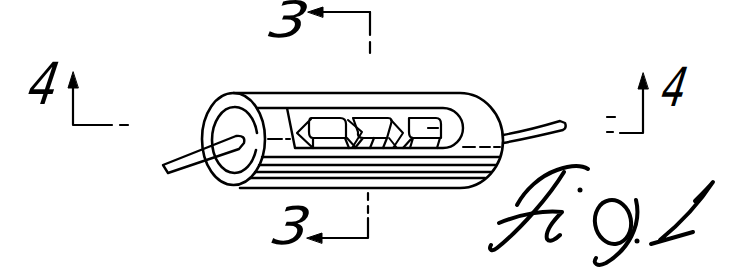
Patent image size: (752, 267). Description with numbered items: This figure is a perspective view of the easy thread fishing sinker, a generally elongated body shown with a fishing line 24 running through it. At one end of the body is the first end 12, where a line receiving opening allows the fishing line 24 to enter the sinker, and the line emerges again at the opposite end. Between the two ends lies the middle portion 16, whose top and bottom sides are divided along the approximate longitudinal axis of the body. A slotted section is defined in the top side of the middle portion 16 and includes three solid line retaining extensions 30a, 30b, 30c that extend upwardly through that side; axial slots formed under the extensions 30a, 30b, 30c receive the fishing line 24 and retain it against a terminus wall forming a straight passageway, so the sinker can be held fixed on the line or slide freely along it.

The first end 12 is at (204, 111).
The middle portion 16 is at (371, 97).
The fishing line 24 is at (194, 166).
The solid line retaining extension 30a is at (325, 122).
The solid line retaining extension 30b is at (392, 124).
The solid line retaining extension 30c is at (433, 130).